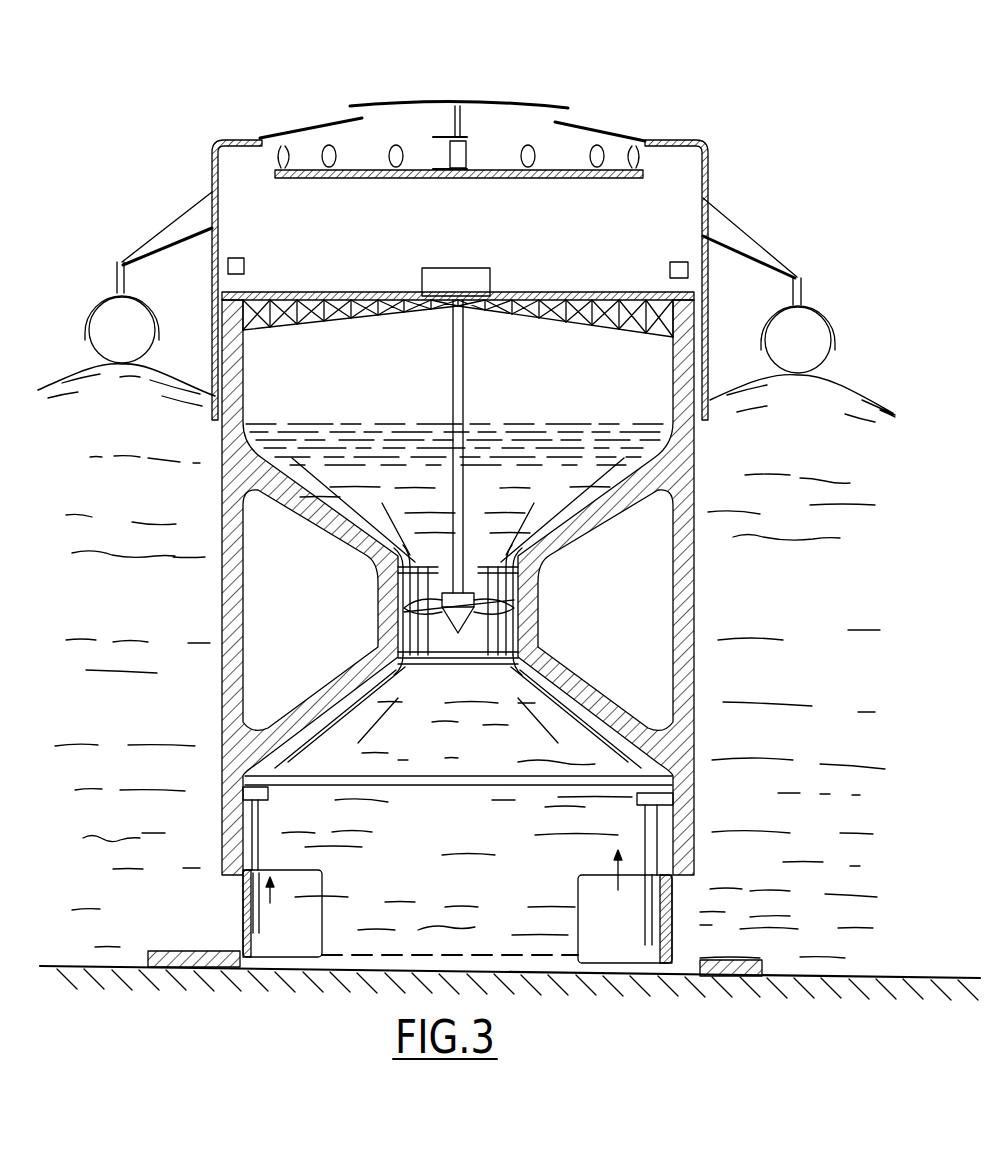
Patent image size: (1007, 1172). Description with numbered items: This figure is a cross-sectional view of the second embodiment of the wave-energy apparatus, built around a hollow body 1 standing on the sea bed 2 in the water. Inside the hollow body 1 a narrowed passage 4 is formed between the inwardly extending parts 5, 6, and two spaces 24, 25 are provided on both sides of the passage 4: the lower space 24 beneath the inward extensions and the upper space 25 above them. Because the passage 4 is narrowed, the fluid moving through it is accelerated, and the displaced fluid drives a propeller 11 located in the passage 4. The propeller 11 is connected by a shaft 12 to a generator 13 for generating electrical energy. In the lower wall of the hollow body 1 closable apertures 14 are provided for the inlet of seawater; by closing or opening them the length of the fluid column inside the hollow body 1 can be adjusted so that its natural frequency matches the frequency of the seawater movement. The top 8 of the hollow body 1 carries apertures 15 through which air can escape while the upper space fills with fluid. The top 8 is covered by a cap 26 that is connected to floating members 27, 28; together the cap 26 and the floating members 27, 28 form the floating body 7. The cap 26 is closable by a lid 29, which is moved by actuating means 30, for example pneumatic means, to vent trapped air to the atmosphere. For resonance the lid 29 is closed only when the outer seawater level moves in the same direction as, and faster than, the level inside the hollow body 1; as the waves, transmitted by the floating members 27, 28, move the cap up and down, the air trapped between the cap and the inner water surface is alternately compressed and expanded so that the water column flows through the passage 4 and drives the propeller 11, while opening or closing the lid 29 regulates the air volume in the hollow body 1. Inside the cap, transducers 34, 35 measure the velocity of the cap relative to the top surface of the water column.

The hollow body 1 is at (704, 612).
The sea bed 2 is at (100, 966).
The narrowed passage 4 is at (532, 642).
The inward extension 5 is at (355, 703).
The inward extension 6 is at (565, 715).
The floating body 7 is at (507, 258).
The top of the hollow body 8 is at (527, 296).
The propeller 11 is at (467, 592).
The shaft 12 is at (452, 400).
The generator 13 is at (432, 280).
The closable apertures 14 is at (318, 930).
The aperture 15 is at (348, 114).
The space 24 is at (468, 826).
The space 25 is at (560, 405).
The cap 26 is at (698, 146).
The floating member 27 is at (125, 352).
The floating member 28 is at (805, 360).
The lid 29 is at (497, 100).
The actuating means 30 is at (463, 154).
The transducer 34 is at (245, 266).
The transducer 35 is at (670, 272).